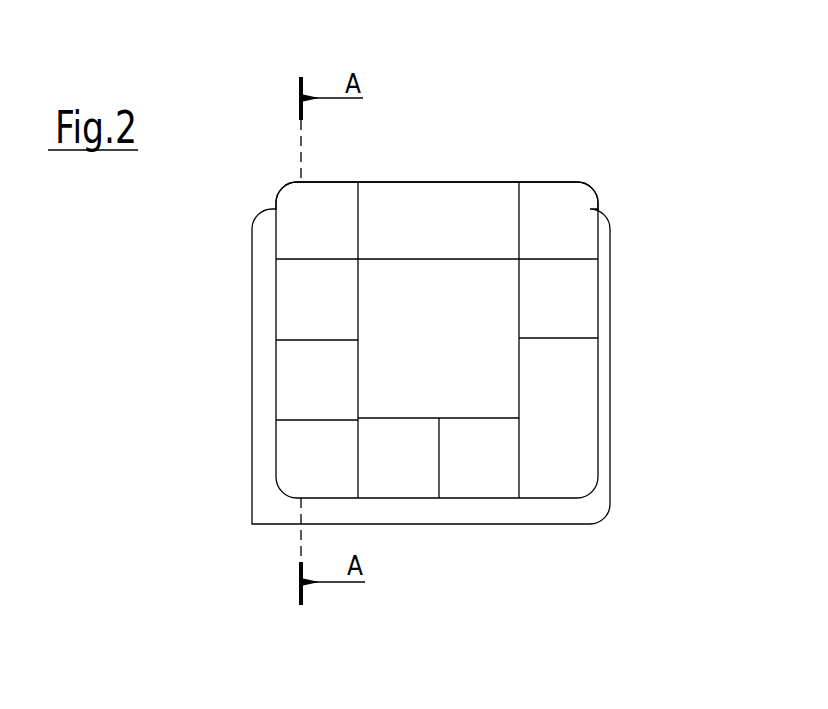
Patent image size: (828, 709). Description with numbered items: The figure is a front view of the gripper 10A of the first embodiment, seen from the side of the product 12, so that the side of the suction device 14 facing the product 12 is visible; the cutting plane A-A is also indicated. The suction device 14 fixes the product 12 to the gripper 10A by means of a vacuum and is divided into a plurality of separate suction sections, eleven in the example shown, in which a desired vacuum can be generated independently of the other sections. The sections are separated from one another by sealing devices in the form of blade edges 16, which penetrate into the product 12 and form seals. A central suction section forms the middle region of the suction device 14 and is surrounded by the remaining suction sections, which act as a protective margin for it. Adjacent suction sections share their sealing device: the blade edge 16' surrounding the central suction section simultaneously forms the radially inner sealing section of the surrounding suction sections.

The gripper 10A is at (488, 133).
The product 12 is at (252, 357).
The suction device 14 is at (547, 173).
The blade edges 16 is at (374, 340).
The blade edge 16' is at (608, 340).